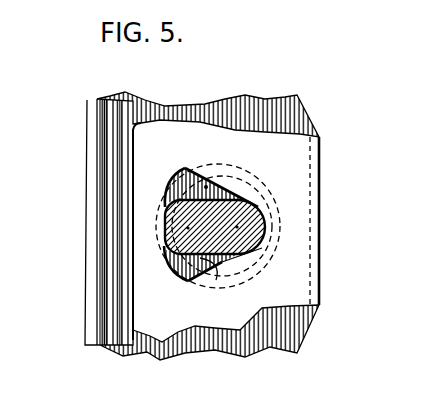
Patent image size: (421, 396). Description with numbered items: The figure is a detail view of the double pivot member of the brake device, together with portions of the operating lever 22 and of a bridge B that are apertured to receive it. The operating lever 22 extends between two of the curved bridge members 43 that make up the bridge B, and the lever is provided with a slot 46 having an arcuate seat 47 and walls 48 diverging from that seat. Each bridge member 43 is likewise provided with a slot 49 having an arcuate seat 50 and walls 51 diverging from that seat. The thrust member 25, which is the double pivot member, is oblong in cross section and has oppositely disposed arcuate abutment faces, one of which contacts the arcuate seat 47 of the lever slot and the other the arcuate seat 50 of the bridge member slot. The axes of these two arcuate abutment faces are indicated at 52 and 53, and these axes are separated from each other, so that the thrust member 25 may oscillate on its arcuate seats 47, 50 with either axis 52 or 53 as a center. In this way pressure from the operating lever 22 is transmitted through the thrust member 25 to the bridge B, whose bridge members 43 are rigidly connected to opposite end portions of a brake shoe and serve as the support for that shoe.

The operating lever 22 is at (103, 100).
The thrust member 25 is at (243, 195).
The bridge member 43 is at (303, 220).
The slot 46 is at (216, 270).
The arcuate seat 47 is at (165, 254).
The walls 48 is at (190, 175).
The slot 49 is at (171, 184).
The arcuate seat 50 is at (260, 206).
The walls 51 is at (222, 178).
The axis 52 is at (153, 214).
The axis 53 is at (263, 249).
The bridge B is at (320, 168).